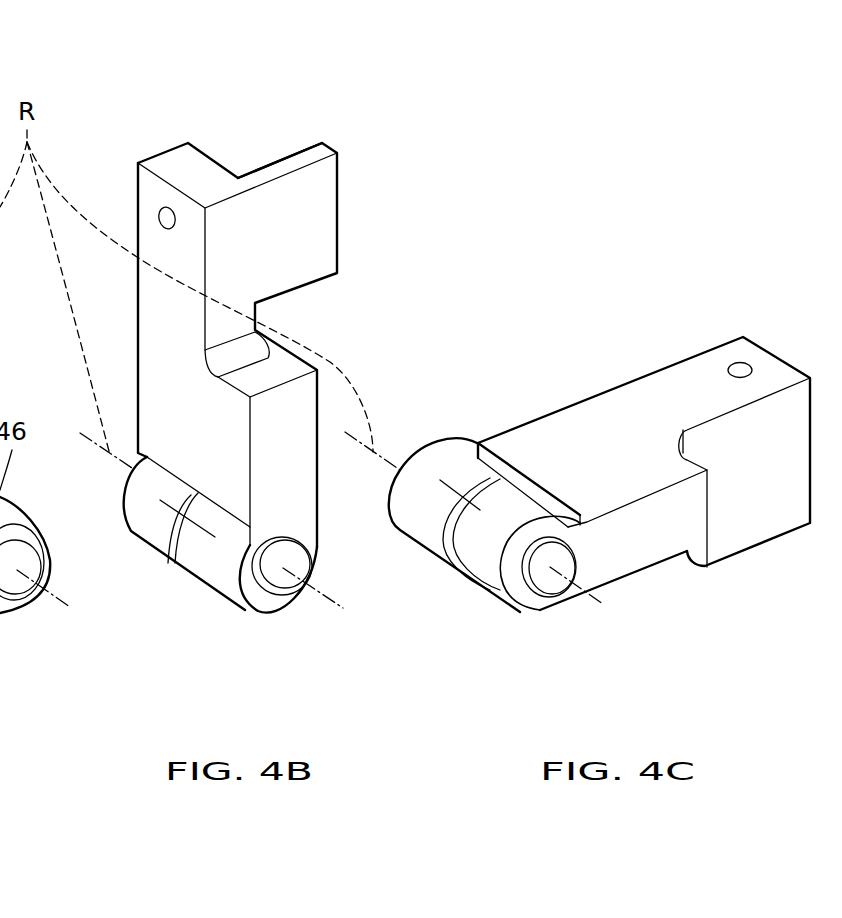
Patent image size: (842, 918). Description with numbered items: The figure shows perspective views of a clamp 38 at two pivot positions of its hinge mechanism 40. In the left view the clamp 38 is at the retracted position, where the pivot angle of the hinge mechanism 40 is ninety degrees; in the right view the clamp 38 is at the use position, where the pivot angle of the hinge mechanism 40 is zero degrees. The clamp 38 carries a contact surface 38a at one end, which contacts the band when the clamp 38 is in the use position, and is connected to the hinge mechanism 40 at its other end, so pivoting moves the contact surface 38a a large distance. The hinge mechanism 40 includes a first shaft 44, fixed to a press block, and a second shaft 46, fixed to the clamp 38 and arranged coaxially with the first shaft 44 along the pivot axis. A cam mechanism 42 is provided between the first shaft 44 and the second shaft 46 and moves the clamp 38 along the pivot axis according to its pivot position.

In FIG. 4B, the clamp 38 is at (360, 176).
In FIG. 4C, the clamp 38 is at (678, 348).
In FIG. 4B, the contact surface 38a is at (278, 162).
In FIG. 4B, the hinge mechanism 40 is at (238, 617).
In FIG. 4C, the hinge mechanism 40 is at (505, 617).
In FIG. 4B, the cam mechanism 42 is at (165, 523).
In FIG. 4C, the cam mechanism 42 is at (432, 520).
In FIG. 4B, the first shaft 44 is at (137, 500).
In FIG. 4C, the first shaft 44 is at (443, 460).
In FIG. 4B, the second shaft 46 is at (193, 553).
In FIG. 4C, the second shaft 46 is at (460, 550).